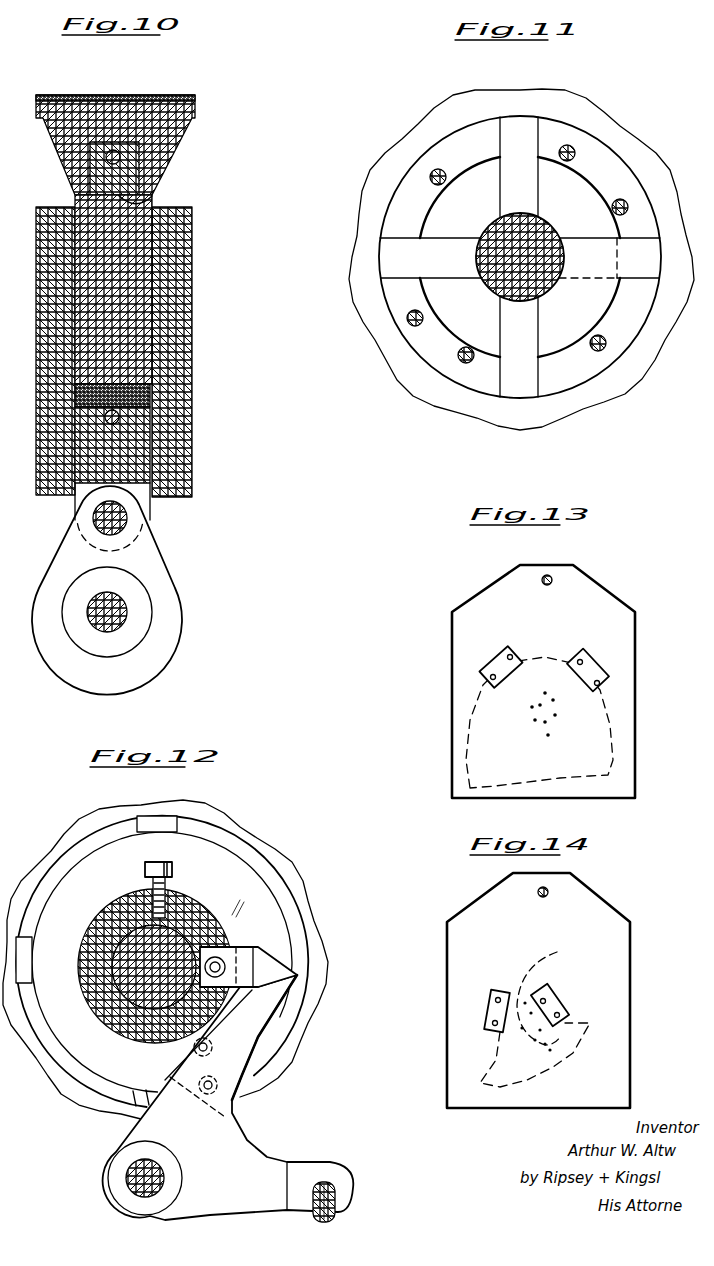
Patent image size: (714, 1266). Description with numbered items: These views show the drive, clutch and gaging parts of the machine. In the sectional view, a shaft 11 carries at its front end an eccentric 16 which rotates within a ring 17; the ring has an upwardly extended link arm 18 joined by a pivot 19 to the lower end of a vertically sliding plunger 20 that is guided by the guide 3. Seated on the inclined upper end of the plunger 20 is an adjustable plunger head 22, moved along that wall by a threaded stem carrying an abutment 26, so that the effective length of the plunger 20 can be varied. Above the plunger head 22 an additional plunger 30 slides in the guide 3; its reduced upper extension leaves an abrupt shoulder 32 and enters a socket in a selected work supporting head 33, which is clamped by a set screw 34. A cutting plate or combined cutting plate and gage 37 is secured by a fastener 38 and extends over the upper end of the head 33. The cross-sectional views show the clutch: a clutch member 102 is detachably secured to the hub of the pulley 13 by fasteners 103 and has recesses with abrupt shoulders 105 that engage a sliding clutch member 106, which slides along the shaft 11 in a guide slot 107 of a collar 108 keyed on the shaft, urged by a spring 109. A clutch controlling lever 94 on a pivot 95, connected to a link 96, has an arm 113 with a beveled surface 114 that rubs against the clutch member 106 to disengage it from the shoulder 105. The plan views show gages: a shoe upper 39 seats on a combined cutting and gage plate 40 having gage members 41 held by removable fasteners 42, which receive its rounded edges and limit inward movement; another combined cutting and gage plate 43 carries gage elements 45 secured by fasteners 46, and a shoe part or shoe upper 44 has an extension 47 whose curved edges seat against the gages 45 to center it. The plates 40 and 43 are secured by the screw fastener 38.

In FIG. 10, the guide 3 is at (180, 278).
In FIG. 10, the shaft 11 is at (127, 609).
In FIG. 11, the shaft 11 is at (520, 301).
In FIG. 12, the shaft 11 is at (135, 940).
In FIG. 11, the pulley 13 is at (527, 423).
In FIG. 12, the pulley 13 is at (236, 833).
In FIG. 10, the eccentric 16 is at (148, 640).
In FIG. 10, the ring 17 is at (103, 680).
In FIG. 10, the link arm 18 is at (146, 547).
In FIG. 10, the pivot 19 is at (100, 520).
In FIG. 10, the plunger 20 is at (130, 455).
In FIG. 10, the plunger head 22 is at (80, 394).
In FIG. 10, the abutment 26 is at (108, 420).
In FIG. 10, the plunger 30 is at (136, 322).
In FIG. 10, the shoulder 32 is at (153, 199).
In FIG. 10, the work supporting head 33 is at (167, 142).
In FIG. 10, the set screw 34 is at (102, 161).
In FIG. 10, the cutting plate or combined cutting plate and gage 37 is at (133, 96).
In FIG. 13, the fastener 38 is at (549, 577).
In FIG. 14, the fastener 38 is at (547, 888).
In FIG. 13, the shoe upper 39 is at (486, 752).
In FIG. 13, the combined cutting and gage plate 40 is at (627, 759).
In FIG. 13, the gage members 41 is at (567, 655).
In FIG. 13, the fasteners 42 is at (490, 676).
In FIG. 14, the combined cutting and gage plate 43 is at (620, 1066).
In FIG. 14, the shoe part or shoe upper 44 is at (503, 1060).
In FIG. 14, the gage elements 45 is at (492, 1003).
In FIG. 14, the fasteners 46 is at (492, 1030).
In FIG. 14, the extension 47 is at (547, 1002).
In FIG. 12, the clutch controlling lever 94 is at (236, 1150).
In FIG. 12, the pivot 95 is at (128, 1180).
In FIG. 12, the link 96 is at (337, 1200).
In FIG. 11, the clutch member 102 is at (442, 366).
In FIG. 12, the clutch member 102 is at (263, 883).
In FIG. 11, the fasteners 103 is at (430, 318).
In FIG. 11, the shoulders 105 is at (465, 258).
In FIG. 11, the clutch member 106 is at (590, 282).
In FIG. 12, the clutch member 106 is at (236, 988).
In FIG. 11, the guide slot 107 is at (442, 218).
In FIG. 12, the guide slot 107 is at (208, 945).
In FIG. 12, the collar 108 is at (120, 1012).
In FIG. 12, the spring 109 is at (238, 946).
In FIG. 12, the arm 113 is at (247, 1032).
In FIG. 12, the beveled surface 114 is at (268, 962).